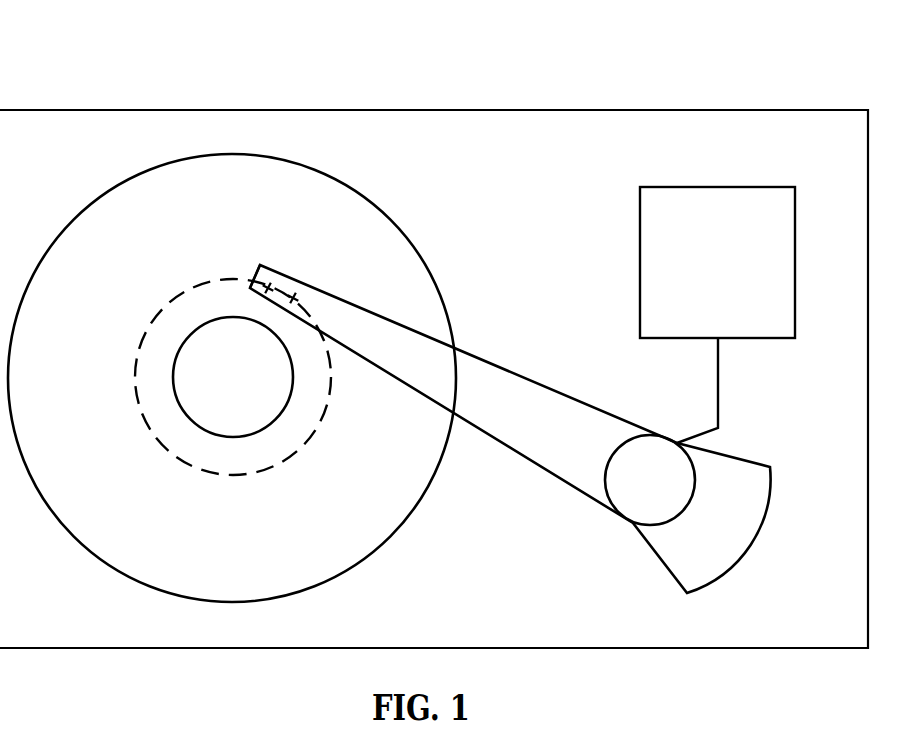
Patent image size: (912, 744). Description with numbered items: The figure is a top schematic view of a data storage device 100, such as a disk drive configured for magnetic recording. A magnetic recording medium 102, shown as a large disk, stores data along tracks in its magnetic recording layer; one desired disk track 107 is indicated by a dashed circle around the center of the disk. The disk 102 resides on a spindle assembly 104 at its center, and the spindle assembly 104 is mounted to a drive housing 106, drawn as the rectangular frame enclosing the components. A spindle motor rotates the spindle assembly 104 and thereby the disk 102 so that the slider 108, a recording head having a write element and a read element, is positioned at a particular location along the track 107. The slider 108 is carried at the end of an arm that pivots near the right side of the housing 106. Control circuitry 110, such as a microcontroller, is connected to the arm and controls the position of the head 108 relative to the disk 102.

The data storage device 100 is at (127, 67).
The magnetic recording medium 102 is at (390, 212).
The spindle assembly 104 is at (257, 382).
The drive housing 106 is at (522, 110).
The disk track 107 is at (178, 297).
The slider 108 is at (283, 278).
The control circuitry 110 is at (737, 277).